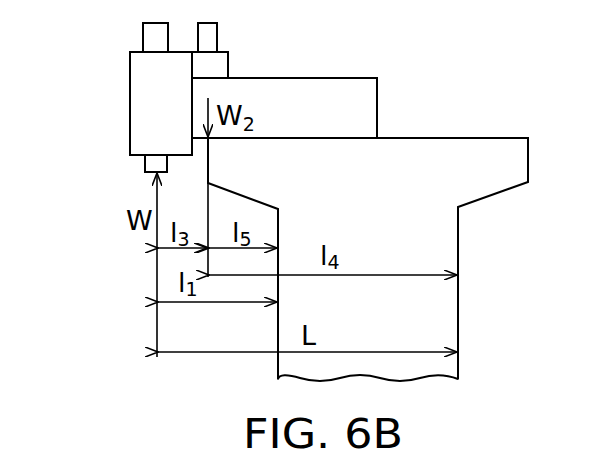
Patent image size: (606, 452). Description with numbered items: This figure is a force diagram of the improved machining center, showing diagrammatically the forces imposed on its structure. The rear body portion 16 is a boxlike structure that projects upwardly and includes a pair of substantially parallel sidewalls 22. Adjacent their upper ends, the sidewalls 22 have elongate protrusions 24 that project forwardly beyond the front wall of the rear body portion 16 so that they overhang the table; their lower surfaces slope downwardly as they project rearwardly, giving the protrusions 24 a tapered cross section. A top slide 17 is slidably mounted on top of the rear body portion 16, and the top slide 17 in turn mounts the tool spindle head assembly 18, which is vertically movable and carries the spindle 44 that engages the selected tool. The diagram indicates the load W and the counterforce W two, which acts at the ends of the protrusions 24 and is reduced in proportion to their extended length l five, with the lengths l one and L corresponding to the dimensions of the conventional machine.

The rear body portion 16 is at (445, 252).
The top slide 17 is at (368, 100).
The tool spindle head assembly 18 is at (130, 110).
The sidewalls 22 is at (368, 293).
The protrusions 24 is at (258, 178).
The spindle 44 is at (145, 163).